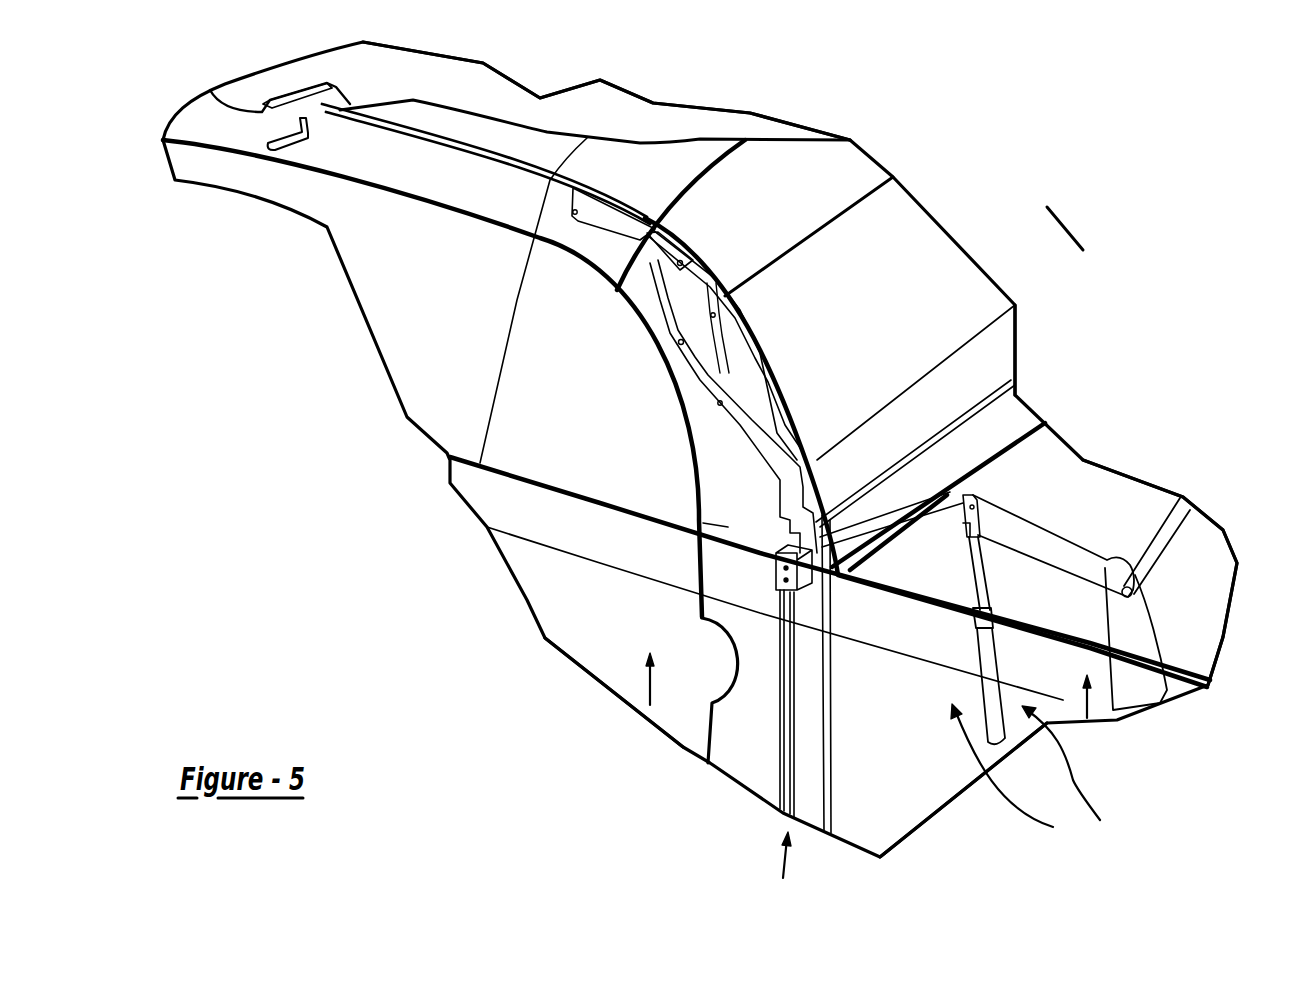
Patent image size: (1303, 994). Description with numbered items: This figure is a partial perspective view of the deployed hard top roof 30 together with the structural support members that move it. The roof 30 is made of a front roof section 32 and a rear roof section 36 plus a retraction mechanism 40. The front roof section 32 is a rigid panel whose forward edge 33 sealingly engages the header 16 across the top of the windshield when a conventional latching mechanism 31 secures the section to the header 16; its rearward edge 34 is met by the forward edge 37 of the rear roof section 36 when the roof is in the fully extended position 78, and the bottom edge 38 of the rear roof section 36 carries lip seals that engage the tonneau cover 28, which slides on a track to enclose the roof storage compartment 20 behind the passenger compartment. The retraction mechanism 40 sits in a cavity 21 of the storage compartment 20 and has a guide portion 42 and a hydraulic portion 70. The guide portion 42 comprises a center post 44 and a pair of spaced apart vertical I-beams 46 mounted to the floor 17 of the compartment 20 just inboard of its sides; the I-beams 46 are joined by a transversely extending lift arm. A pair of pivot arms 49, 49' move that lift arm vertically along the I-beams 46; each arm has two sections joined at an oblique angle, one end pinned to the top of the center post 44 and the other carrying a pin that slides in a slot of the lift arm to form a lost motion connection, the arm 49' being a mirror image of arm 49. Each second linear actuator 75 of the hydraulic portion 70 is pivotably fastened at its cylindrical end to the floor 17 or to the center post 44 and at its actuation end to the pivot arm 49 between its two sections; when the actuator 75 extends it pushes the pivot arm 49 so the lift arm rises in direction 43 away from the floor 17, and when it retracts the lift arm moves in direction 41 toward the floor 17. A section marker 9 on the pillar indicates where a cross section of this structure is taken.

The section line 9- 9 is at (768, 583).
The header 16 is at (250, 88).
The floor 17 is at (900, 827).
The roof storage compartment 20 is at (723, 740).
The cavity 21 is at (945, 784).
The tonneau cover 28 is at (1140, 503).
The retractable hard top roof 30 is at (921, 147).
The latching mechanism 31 is at (237, 113).
The front roof section 32 is at (548, 110).
The forward edge 33 is at (428, 66).
The rearward edge 34 is at (693, 167).
The rear roof section 36 is at (950, 236).
The forward edge 37 is at (782, 138).
The bottom edge 38 is at (990, 324).
The retraction mechanism 40 is at (1013, 786).
The direction toward floor 41 is at (1087, 695).
The guide portion 42 is at (783, 878).
The direction away from floor 43 is at (648, 677).
The center post 44 is at (1150, 633).
The vertical I-beams 46 is at (843, 747).
The pivot arm 49 is at (1053, 535).
The pivot arm 49' is at (1211, 546).
The hydraulic portion 70 is at (1076, 774).
The second linear actuator 75 is at (990, 668).
The fully extended position 78 is at (1068, 230).